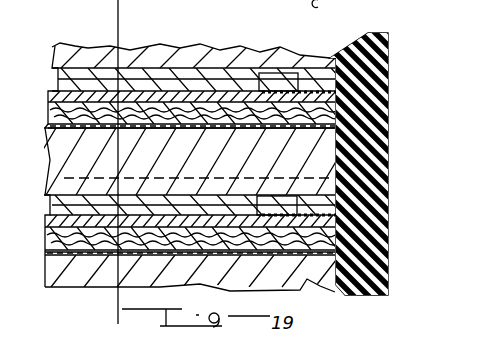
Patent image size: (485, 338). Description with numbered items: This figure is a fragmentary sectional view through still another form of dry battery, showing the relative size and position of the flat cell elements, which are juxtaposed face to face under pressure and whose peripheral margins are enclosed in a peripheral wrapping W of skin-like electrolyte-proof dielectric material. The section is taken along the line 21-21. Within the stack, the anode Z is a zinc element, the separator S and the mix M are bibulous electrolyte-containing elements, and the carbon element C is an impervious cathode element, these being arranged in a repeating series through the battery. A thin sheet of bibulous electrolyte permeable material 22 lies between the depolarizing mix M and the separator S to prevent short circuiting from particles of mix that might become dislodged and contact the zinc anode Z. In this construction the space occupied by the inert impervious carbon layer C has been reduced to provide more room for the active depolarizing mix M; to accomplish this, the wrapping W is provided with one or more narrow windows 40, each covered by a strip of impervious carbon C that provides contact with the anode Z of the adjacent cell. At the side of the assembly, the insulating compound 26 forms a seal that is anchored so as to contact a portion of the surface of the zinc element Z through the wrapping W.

The section line 21- 21 is at (112, 12).
The electrolyte permeable material 22 is at (47, 150).
The insulating compound 26 is at (388, 52).
The windows 40 is at (262, 92).
The mix M is at (89, 47).
The carbon element C is at (170, 73).
The anode Z is at (48, 98).
The separator S is at (48, 115).
The wrapping W is at (369, 79).